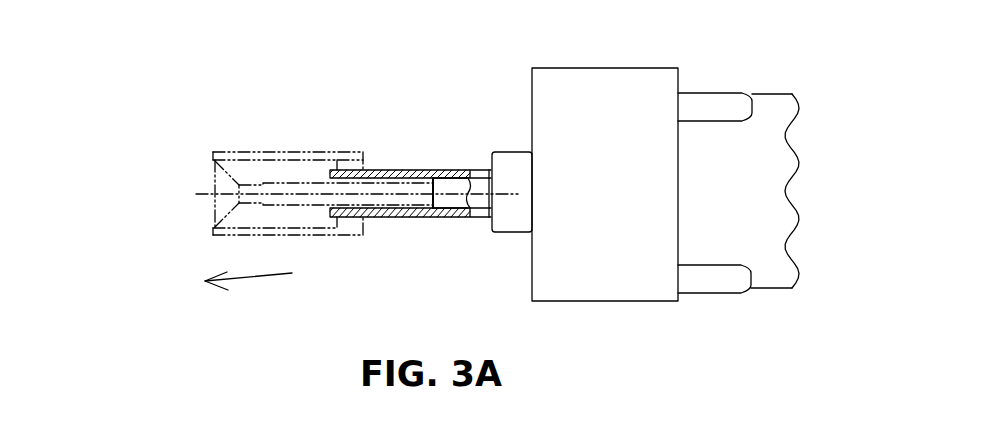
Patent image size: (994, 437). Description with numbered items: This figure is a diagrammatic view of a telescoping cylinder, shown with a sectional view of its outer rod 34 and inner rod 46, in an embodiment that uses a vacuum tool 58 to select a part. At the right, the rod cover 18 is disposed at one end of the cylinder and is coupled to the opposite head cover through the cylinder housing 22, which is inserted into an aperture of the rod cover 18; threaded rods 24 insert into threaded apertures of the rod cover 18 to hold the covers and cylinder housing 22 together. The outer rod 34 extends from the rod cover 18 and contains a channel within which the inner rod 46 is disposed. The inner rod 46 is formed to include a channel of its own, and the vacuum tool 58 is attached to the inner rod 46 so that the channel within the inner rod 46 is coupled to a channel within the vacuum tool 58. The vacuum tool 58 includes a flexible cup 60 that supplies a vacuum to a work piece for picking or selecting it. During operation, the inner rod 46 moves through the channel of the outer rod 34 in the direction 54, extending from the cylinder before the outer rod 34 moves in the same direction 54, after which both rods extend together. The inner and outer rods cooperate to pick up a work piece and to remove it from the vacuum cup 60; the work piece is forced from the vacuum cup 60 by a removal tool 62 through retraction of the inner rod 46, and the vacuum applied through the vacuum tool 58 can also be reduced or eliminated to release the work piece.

The rod cover 18 is at (603, 95).
The cylinder housing 22 is at (768, 148).
The threaded rods 24 is at (700, 105).
The outer rod 34 is at (413, 172).
The inner rod 46 is at (457, 196).
The direction 54 is at (262, 282).
The vacuum tool 58 is at (276, 184).
The flexible cup 60 is at (222, 178).
The removal tool 62 is at (350, 157).